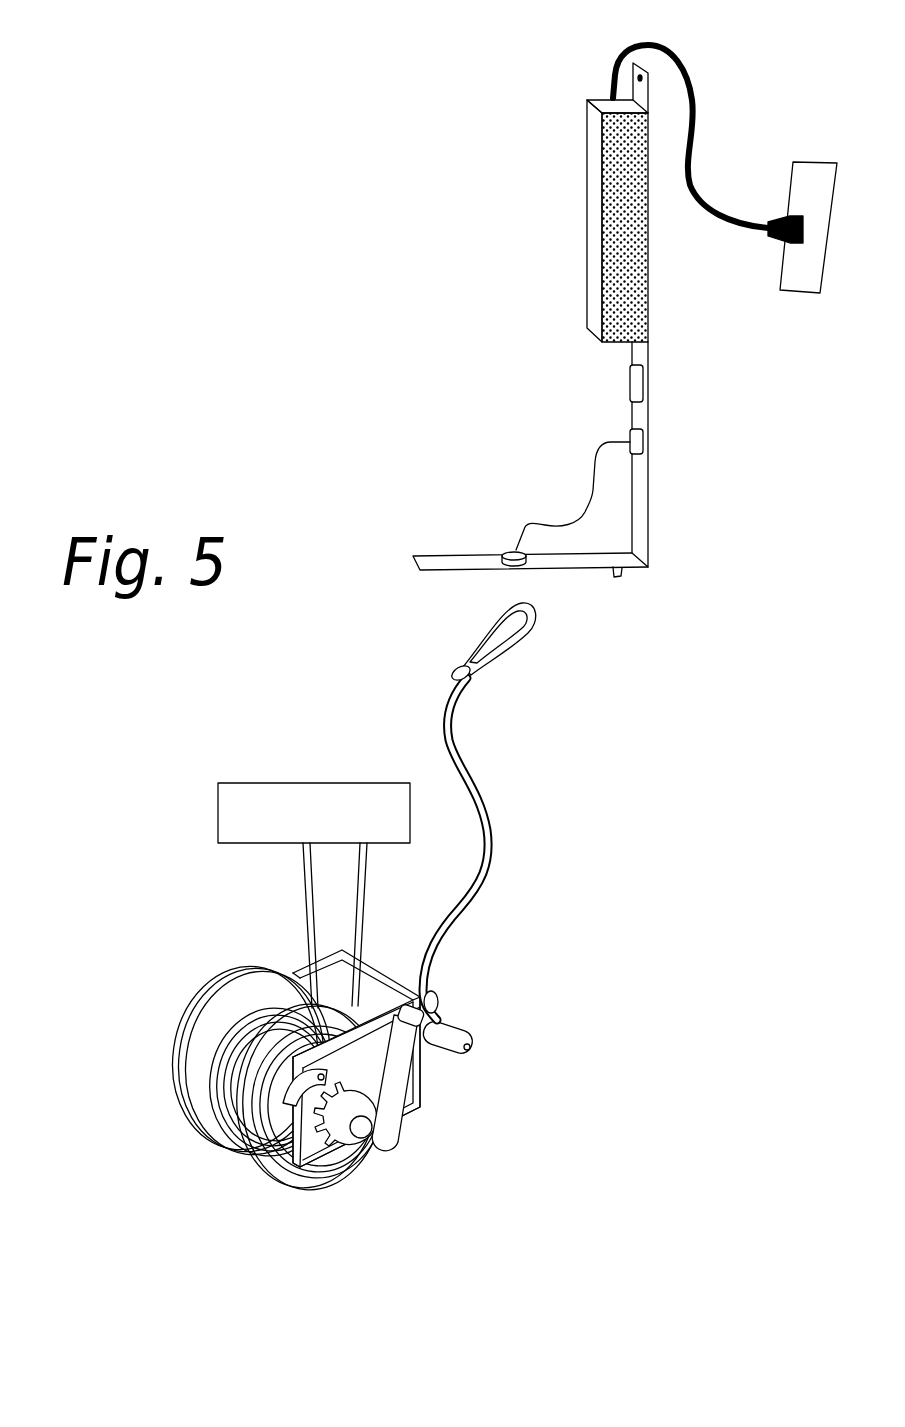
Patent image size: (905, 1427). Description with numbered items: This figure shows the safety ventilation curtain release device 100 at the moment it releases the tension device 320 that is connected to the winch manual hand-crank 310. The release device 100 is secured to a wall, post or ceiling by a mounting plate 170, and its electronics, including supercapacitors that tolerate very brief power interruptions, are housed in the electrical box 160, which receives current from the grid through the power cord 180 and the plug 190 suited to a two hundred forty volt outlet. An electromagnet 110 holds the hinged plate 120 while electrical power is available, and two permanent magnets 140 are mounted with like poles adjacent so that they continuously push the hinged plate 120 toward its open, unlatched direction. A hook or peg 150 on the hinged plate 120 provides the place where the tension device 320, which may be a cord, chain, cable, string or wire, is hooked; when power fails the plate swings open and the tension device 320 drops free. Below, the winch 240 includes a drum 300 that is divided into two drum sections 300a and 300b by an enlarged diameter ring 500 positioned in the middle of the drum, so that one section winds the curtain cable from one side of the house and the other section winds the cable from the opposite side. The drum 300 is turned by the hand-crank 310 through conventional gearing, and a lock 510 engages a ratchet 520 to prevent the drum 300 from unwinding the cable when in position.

The safety ventilation curtain release device 100 is at (598, 354).
The electromagnet 110 is at (630, 382).
The hinged plate 120 is at (475, 550).
The permanent magnets 140 is at (591, 496).
The hook or peg 150 is at (618, 578).
The electrical box 160 is at (615, 173).
The mounting plate 170 is at (633, 90).
The power cord 180 is at (693, 133).
The plug 190 is at (775, 240).
The winch 240 is at (336, 944).
The drum 300 is at (245, 1053).
The drum section 300a is at (230, 1033).
The drum section 300b is at (268, 1010).
The winch manual hand-crank 310 is at (420, 1087).
The tension device 320 is at (487, 815).
The enlarged diameter ring 500 is at (237, 1143).
The lock 510 is at (297, 1165).
The ratchet 520 is at (357, 1148).